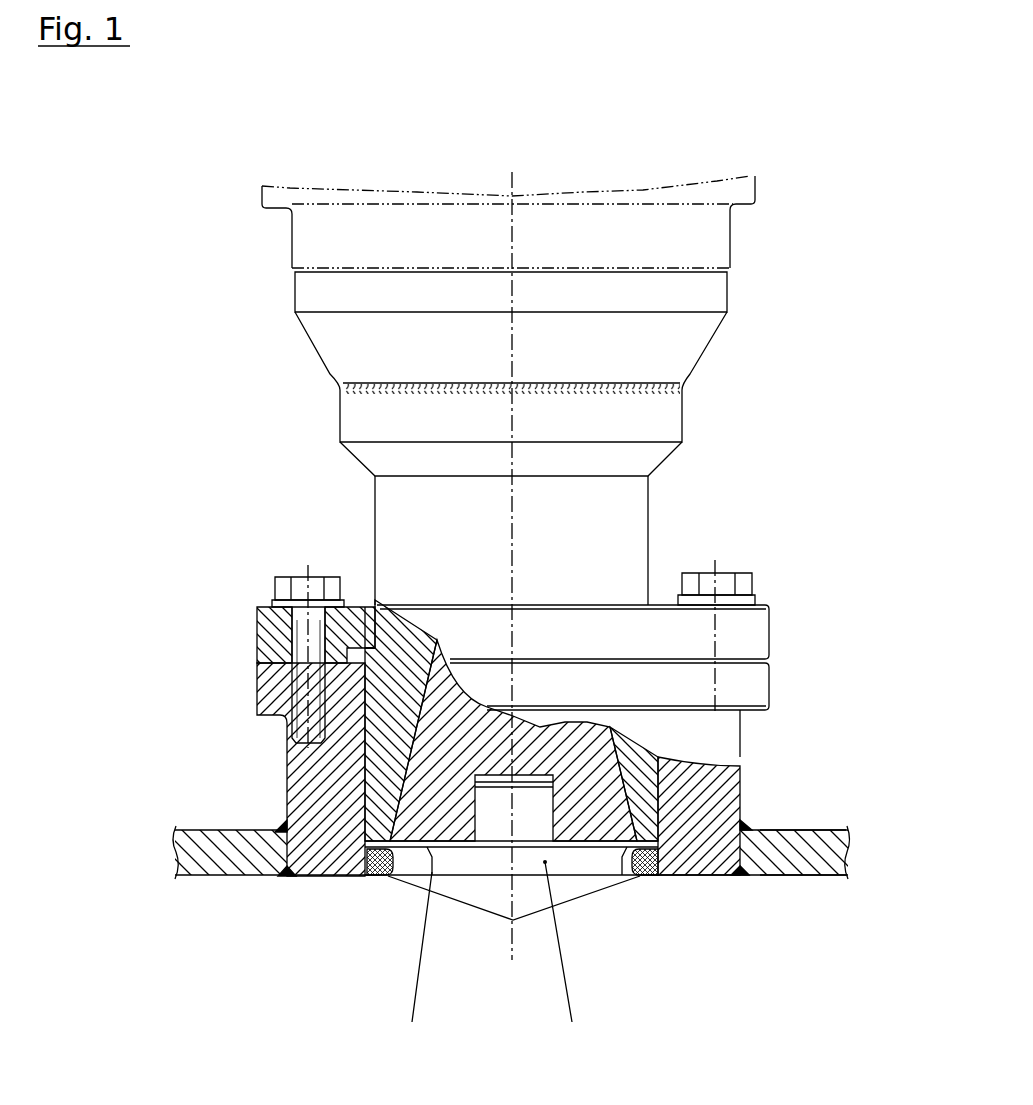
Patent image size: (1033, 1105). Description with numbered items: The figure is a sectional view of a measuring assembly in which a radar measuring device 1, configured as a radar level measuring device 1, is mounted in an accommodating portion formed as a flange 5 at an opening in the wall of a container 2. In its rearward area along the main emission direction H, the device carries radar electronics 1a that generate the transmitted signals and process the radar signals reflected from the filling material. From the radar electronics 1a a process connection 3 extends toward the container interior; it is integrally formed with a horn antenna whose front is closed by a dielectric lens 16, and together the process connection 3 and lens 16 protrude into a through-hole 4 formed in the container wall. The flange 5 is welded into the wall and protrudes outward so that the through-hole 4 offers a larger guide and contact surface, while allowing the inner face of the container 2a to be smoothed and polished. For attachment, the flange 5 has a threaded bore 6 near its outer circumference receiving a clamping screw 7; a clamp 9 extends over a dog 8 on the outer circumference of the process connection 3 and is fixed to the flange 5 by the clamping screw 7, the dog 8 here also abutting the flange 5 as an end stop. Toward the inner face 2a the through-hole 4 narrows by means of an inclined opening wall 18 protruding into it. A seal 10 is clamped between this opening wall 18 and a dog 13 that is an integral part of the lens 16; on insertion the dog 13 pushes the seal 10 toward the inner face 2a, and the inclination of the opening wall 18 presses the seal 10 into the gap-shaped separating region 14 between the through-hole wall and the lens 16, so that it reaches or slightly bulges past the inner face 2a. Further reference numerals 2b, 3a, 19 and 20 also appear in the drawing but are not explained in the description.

The radar level measuring device 1 is at (185, 272).
The radar electronics 1a is at (845, 268).
The container 2 is at (175, 857).
The inner face of the container 2a is at (785, 872).
The outer side of wall 2b is at (813, 827).
The process connection 3 is at (403, 695).
The pipe socket 3a is at (712, 288).
The through-hole 4 is at (360, 778).
The flange 5 is at (328, 813).
The threaded bore 6 is at (268, 608).
The clamping screw 7 is at (298, 588).
The dog 8 is at (368, 641).
The clamp 9 is at (353, 640).
The seal 10 is at (378, 876).
The dog 13 is at (660, 833).
The separating region 14 is at (645, 877).
The dielectric lens 16 is at (478, 888).
The opening wall 18 is at (370, 877).
The sealing ring 19 is at (643, 877).
The cover plate 20 is at (640, 877).
The main emission direction H is at (515, 960).